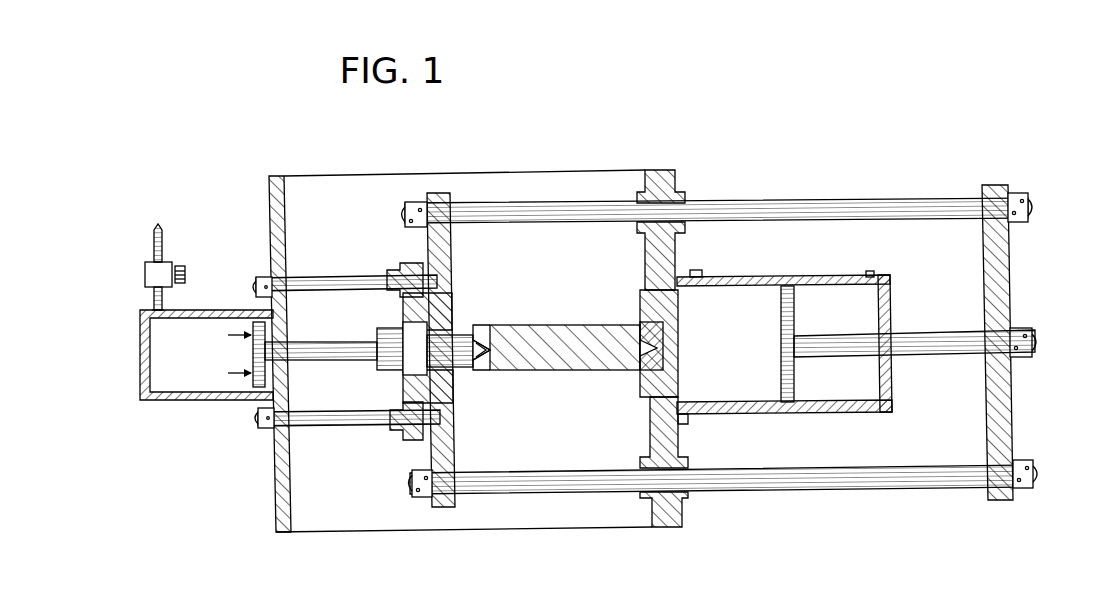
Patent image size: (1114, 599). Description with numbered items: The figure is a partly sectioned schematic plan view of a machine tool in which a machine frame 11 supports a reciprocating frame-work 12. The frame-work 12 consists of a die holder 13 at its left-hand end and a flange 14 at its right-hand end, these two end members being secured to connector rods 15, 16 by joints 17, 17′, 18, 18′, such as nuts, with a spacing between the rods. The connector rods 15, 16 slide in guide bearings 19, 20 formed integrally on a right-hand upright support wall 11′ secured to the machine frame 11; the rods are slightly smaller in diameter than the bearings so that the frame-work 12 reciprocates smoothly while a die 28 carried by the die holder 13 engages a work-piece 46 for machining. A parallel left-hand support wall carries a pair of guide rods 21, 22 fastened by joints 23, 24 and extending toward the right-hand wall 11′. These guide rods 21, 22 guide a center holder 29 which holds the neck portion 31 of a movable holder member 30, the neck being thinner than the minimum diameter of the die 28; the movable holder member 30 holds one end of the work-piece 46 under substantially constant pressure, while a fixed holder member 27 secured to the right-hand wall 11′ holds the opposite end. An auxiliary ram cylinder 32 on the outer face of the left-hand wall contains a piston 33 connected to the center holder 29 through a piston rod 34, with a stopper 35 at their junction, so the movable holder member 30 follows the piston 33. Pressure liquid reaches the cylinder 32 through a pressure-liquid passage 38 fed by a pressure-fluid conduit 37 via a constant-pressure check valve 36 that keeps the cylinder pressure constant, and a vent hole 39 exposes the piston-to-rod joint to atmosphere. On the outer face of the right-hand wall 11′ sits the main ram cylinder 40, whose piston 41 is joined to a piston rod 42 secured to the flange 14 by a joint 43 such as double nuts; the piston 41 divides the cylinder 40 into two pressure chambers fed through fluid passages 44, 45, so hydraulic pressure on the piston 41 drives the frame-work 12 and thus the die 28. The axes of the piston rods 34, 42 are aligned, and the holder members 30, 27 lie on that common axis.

The machine frame 11 is at (543, 171).
The right-hand upright support wall 11′ is at (667, 170).
The reciprocating frame-work 12 is at (789, 254).
The die holder 13 is at (438, 193).
The flange 14 is at (993, 185).
The connector rod 15 is at (823, 204).
The connector rod 16 is at (822, 485).
The joint 17 is at (410, 202).
The joint 17′ is at (417, 498).
The joint 18 is at (1022, 194).
The joint 18′ is at (1028, 488).
The guide bearing 19 is at (686, 196).
The guide bearing 20 is at (689, 512).
The guide rod 21 is at (330, 278).
The guide rod 22 is at (317, 428).
The joint 23 is at (257, 280).
The joint 24 is at (262, 424).
The fixed holder member 27 is at (676, 353).
The die 28 is at (455, 382).
The center holder 29 is at (407, 441).
The movable holder member 30 is at (493, 371).
The neck portion 31 is at (459, 336).
The auxiliary ram cylinder 32 is at (142, 401).
The piston 33 is at (252, 352).
The piston rod 34 is at (325, 363).
The stopper 35 is at (378, 364).
The check valve 36 is at (158, 266).
The pressure-fluid conduit 37 is at (163, 298).
The pressure-liquid passage 38 is at (151, 311).
The vent hole 39 is at (288, 341).
The main ram cylinder 40 is at (771, 410).
The piston 41 is at (796, 372).
The piston rod 42 is at (930, 359).
The joint 43 is at (1032, 332).
The fluid passage 44 is at (698, 272).
The fluid passage 45 is at (870, 272).
The work-piece 46 is at (561, 326).